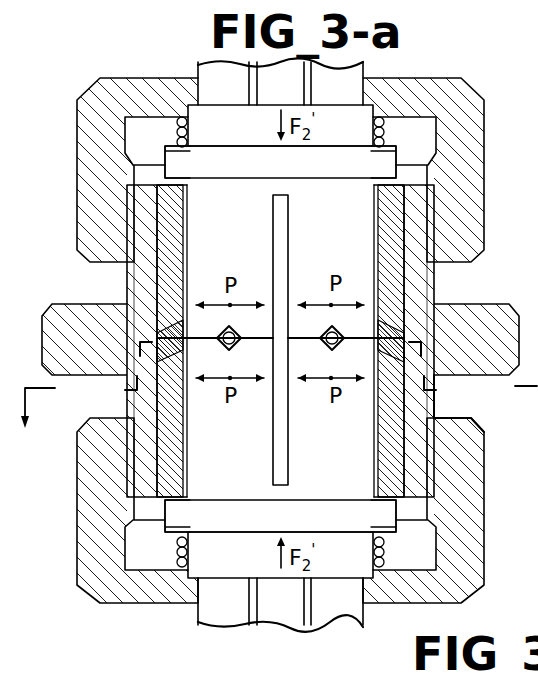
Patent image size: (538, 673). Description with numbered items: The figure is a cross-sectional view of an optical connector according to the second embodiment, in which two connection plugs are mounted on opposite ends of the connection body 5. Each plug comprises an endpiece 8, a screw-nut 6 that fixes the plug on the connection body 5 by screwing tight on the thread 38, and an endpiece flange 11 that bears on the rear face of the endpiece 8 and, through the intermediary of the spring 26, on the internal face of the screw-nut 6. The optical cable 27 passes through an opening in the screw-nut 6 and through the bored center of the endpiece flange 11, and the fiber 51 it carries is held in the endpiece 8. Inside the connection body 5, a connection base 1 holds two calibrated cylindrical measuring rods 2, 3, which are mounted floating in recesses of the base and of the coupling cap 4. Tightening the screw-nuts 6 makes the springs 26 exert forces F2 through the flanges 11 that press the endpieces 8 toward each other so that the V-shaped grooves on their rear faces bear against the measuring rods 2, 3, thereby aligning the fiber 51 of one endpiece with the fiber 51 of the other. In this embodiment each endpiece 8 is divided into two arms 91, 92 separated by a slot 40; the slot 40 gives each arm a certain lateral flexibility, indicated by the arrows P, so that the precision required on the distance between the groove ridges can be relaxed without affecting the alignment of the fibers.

The connection base 1 is at (167, 267).
The calibrated cylindrical measuring rod 2 is at (238, 344).
The calibrated cylindrical measuring rod 3 is at (325, 344).
The coupling cap 4 is at (183, 331).
The connection body 5 is at (418, 294).
The screw-nut 6 is at (465, 133).
The endpiece 8 is at (430, 396).
The endpiece flange 11 is at (303, 172).
The spring 26 is at (192, 147).
The optical cable 27 is at (213, 66).
The thread 38 is at (458, 443).
The slot 40 is at (273, 243).
The fiber 51 is at (307, 630).
The arm 91 is at (212, 188).
The arm 92 is at (333, 173).